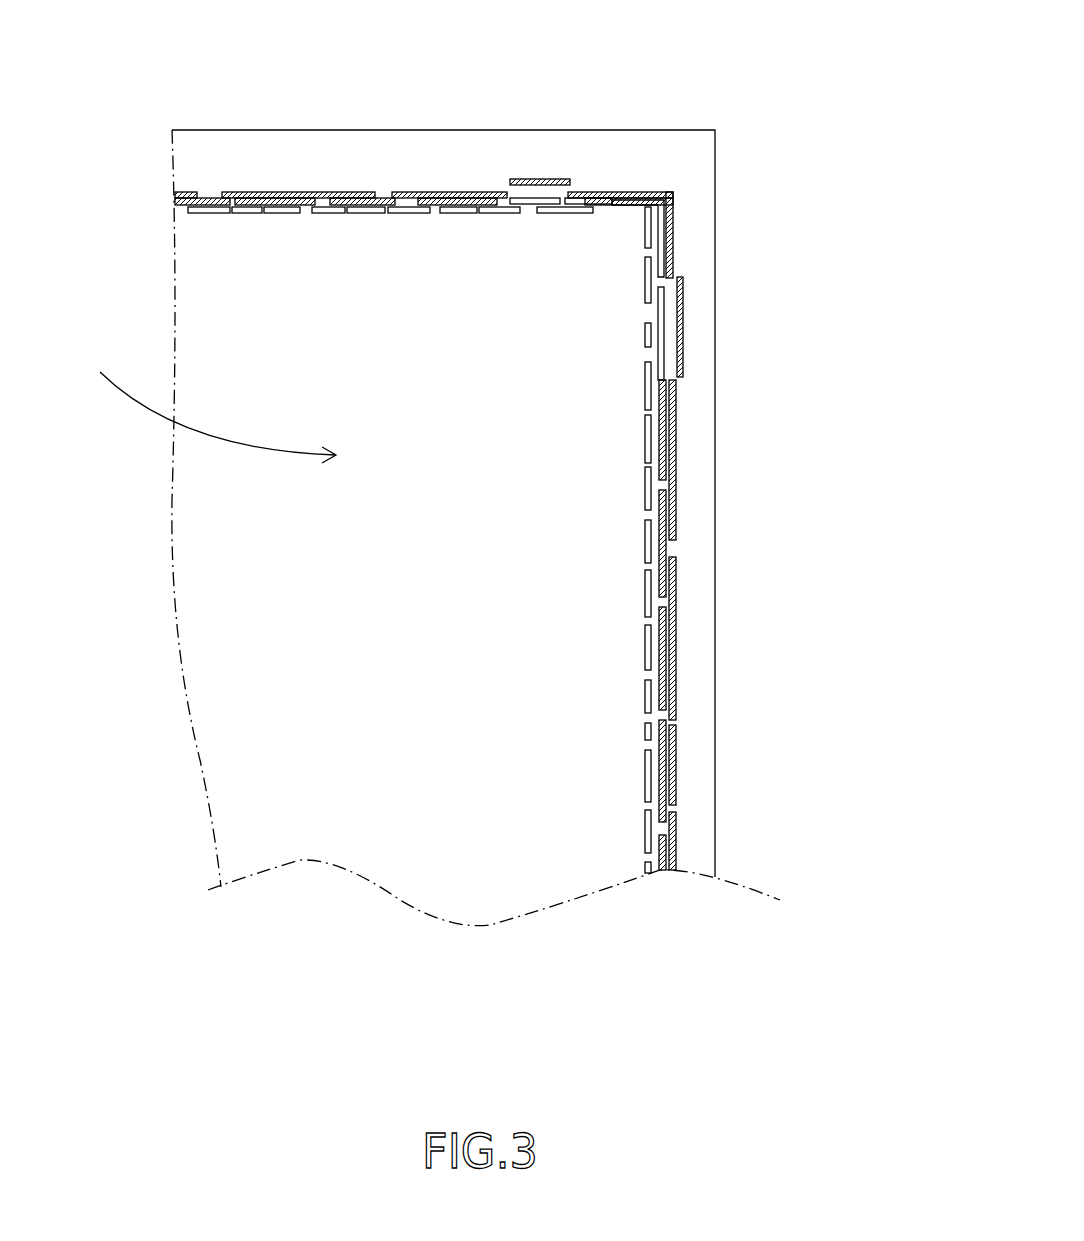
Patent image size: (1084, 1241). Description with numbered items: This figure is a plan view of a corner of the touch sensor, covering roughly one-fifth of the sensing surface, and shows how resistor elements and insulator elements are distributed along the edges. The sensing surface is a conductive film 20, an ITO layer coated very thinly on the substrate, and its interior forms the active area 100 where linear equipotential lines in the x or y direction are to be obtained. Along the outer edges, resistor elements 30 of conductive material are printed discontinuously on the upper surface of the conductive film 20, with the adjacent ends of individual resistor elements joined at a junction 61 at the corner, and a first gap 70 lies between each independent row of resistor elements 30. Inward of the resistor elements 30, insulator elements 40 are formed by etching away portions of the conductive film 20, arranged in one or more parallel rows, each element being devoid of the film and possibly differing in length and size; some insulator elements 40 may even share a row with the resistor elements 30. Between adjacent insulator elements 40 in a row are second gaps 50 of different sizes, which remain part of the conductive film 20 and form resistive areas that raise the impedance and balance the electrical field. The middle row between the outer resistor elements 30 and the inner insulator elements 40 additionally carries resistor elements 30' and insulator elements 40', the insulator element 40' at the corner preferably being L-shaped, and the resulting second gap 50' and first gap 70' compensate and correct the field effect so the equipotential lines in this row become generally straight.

The active area 100 is at (138, 370).
The conductive film 20 is at (385, 678).
The resistor element 30 is at (671, 216).
The resistor element 30' is at (547, 455).
The insulator element 40 is at (509, 449).
The insulator element 40' is at (789, 297).
The second gap 50 is at (528, 444).
The second gap 50' is at (747, 248).
The junction 61 is at (716, 148).
The first gap 70 is at (668, 283).
The first gap 70' is at (748, 470).